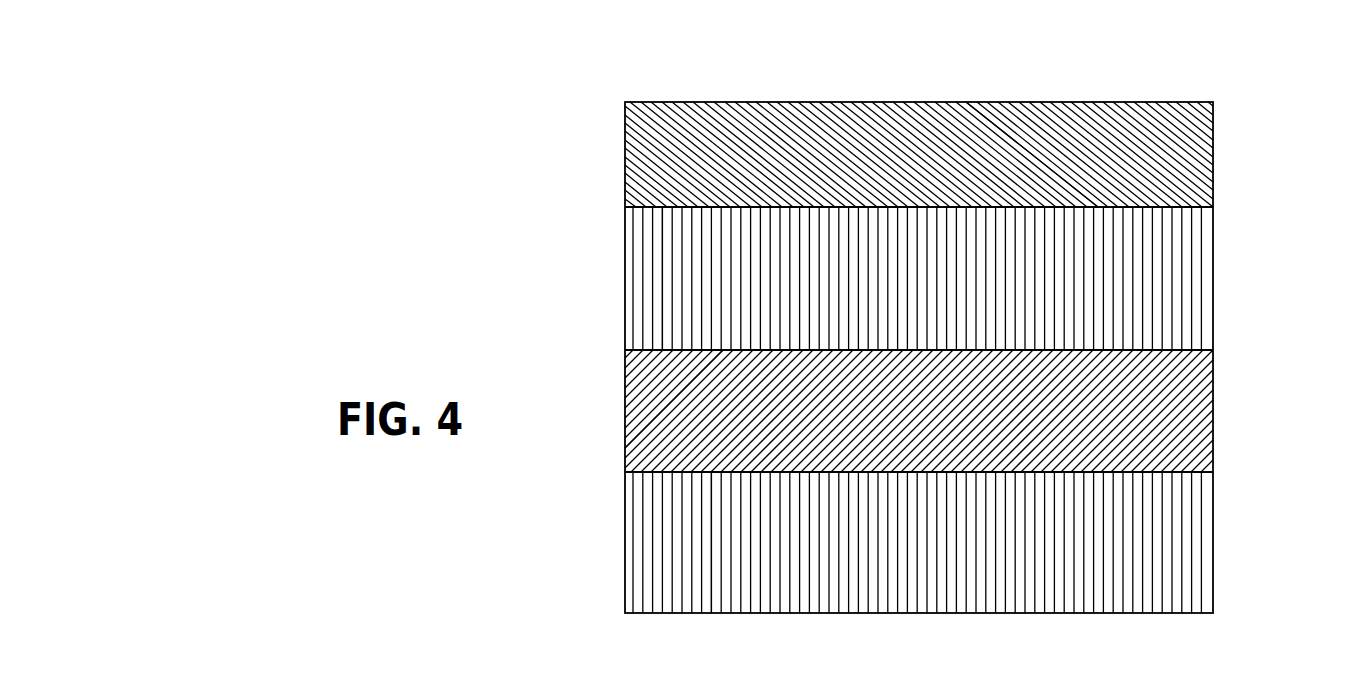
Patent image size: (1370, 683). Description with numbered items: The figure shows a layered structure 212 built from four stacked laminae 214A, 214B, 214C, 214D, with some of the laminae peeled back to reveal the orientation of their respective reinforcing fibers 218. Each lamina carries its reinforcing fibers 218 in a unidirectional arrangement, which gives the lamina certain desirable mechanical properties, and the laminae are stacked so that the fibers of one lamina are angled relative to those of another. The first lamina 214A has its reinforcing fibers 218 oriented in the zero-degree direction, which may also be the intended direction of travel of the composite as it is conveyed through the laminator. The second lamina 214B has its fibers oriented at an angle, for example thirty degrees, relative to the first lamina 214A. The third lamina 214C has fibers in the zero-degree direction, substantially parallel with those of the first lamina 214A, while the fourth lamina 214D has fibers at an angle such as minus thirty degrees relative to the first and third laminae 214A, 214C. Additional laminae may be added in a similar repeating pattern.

The layered structure 212 is at (555, 313).
The first lamina 214A is at (1214, 522).
The second lamina 214B is at (1214, 380).
The third lamina 214C is at (1213, 280).
The fourth lamina 214D is at (1212, 140).
The reinforcing fibers 218 is at (1035, 150).